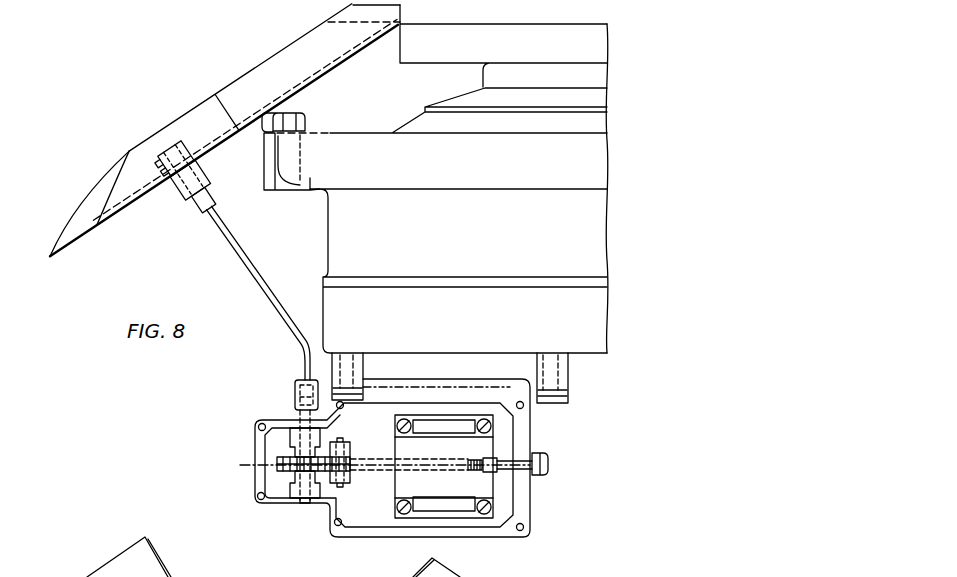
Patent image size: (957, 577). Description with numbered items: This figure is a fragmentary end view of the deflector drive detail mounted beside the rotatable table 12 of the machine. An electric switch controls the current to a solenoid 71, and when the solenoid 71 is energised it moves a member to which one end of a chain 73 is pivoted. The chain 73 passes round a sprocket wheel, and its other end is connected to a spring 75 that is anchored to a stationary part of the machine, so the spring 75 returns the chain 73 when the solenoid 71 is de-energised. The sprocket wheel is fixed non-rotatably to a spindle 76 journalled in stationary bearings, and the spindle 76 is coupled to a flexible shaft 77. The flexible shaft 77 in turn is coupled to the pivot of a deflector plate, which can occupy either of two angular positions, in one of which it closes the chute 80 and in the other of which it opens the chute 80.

The rotatable table 12 is at (445, 28).
The chute 80 is at (92, 220).
The flexible shaft 77 is at (272, 308).
The chain 73 is at (277, 468).
The spring 75 is at (357, 457).
The spindle 76 is at (282, 503).
The solenoid 71 is at (483, 485).